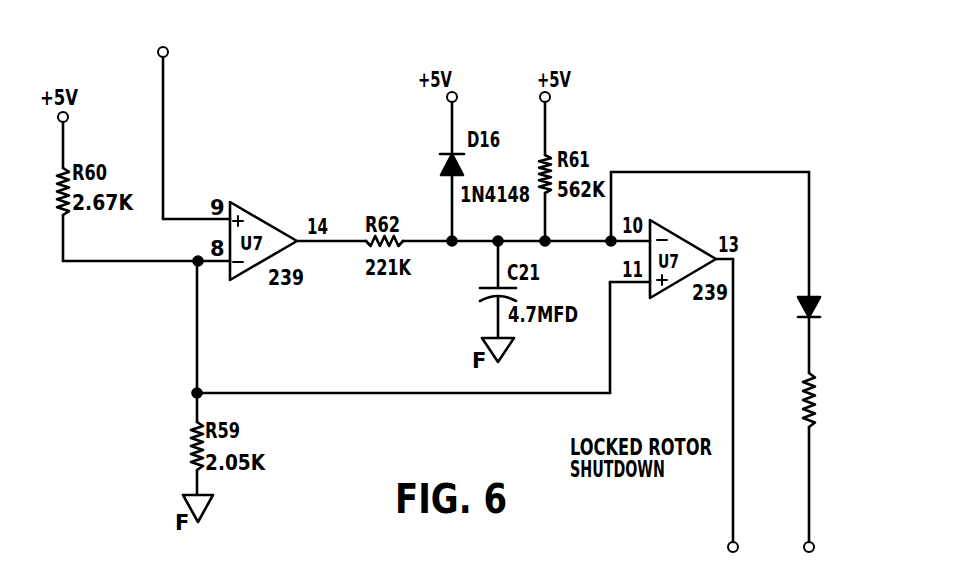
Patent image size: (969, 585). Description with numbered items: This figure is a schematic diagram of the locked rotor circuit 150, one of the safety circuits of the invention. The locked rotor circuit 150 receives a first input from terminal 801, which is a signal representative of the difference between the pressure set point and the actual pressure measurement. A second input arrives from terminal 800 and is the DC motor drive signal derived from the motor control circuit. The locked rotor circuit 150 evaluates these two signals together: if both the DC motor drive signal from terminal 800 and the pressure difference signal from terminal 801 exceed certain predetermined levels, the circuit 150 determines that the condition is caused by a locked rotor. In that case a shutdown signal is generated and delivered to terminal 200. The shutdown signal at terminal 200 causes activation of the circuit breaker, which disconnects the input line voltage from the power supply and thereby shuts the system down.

The terminal 801 is at (167, 48).
The locked rotor circuit 150 is at (461, 408).
The terminal 200 is at (728, 543).
The terminal 800 is at (814, 543).